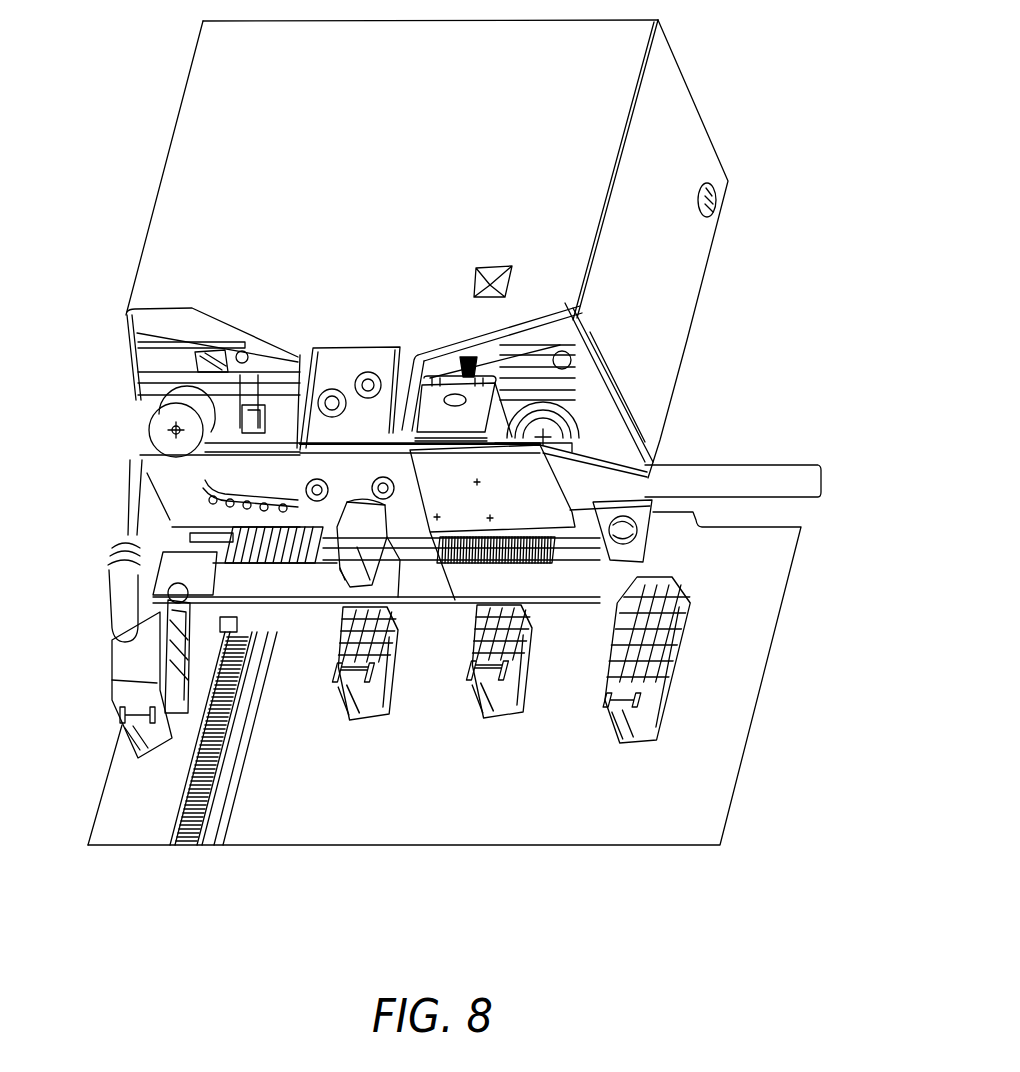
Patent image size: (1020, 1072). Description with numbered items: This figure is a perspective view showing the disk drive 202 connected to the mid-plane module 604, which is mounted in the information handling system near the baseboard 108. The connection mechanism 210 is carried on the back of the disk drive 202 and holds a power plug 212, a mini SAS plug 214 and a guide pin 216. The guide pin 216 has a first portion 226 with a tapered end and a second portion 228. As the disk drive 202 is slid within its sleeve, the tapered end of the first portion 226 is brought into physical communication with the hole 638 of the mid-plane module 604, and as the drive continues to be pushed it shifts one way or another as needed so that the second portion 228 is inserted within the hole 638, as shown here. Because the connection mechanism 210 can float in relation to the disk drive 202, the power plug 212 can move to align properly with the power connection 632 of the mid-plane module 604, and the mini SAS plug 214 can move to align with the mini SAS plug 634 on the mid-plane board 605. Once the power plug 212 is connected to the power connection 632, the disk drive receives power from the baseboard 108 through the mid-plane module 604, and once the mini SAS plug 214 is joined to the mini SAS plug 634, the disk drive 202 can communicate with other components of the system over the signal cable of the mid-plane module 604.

The baseboard 108 is at (680, 702).
The disk drive 202 is at (558, 328).
The connection mechanism 210 is at (118, 389).
The power plug 212 is at (130, 325).
The mini SAS plug 214 is at (316, 350).
The guide pin 216 is at (396, 606).
The first portion 226 is at (350, 565).
The second portion 228 is at (385, 578).
The mid-plane module 604 is at (118, 517).
The mid-plane board 605 is at (168, 496).
The power connection 632 is at (174, 434).
The mini SAS plug 634 is at (605, 405).
The hole 638 is at (308, 542).